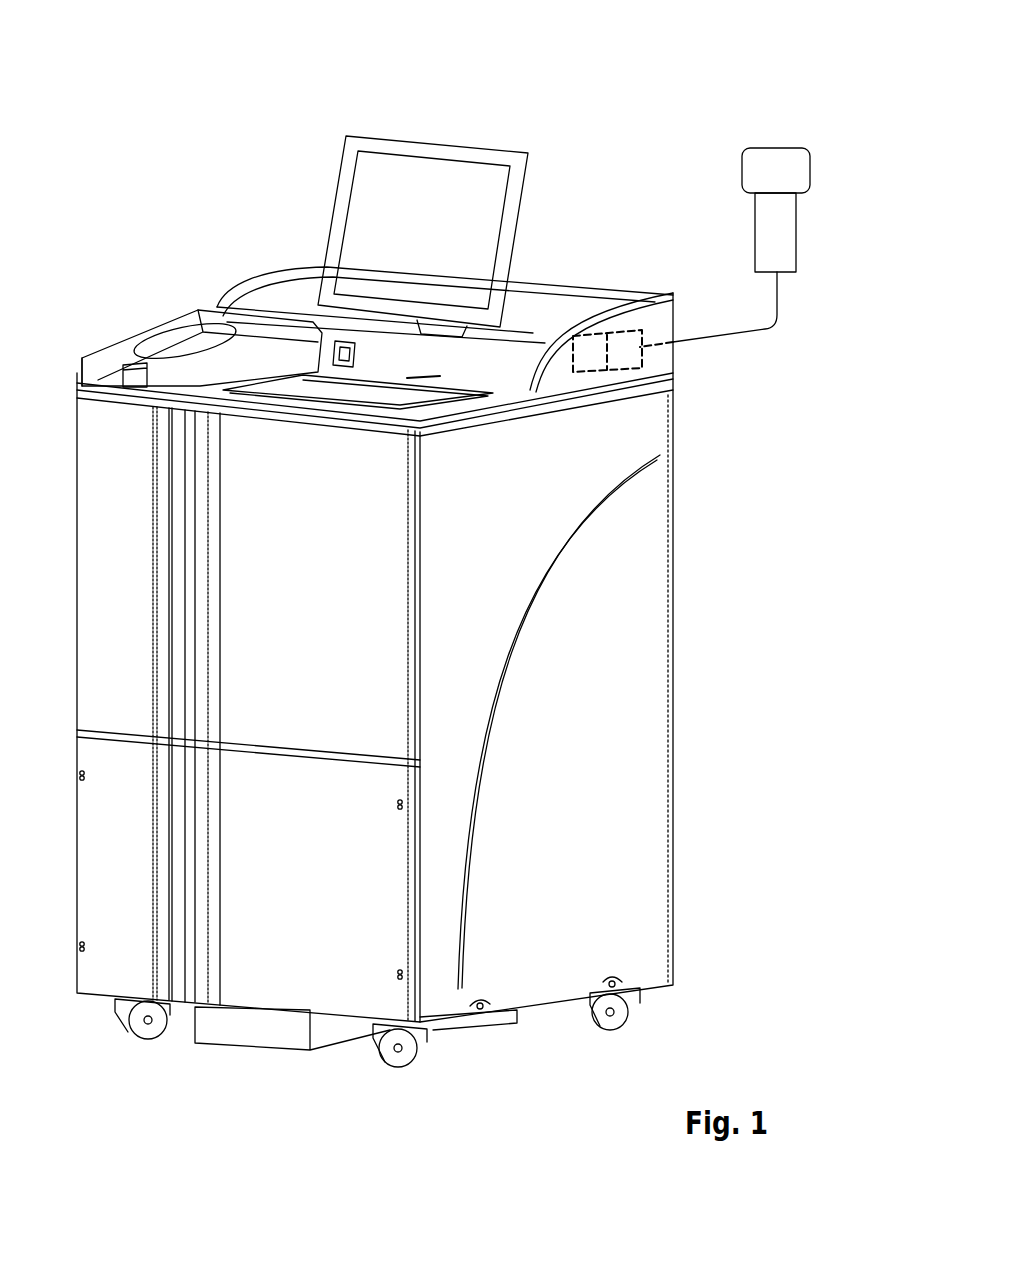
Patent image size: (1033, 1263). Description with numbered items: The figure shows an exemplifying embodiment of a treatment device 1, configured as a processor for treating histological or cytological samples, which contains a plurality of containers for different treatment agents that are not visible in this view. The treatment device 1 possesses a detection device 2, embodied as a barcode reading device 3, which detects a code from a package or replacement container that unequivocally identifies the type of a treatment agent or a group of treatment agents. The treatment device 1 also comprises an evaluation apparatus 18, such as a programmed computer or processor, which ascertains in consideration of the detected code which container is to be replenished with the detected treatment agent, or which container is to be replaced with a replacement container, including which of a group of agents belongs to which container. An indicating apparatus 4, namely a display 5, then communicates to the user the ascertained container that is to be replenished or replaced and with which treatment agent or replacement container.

The treatment device 1 is at (144, 151).
The detection device 2 is at (722, 109).
The barcode reading device 3 is at (770, 212).
The indicating apparatus 4 is at (549, 94).
The display 5 is at (408, 175).
The evaluation apparatus 18 is at (624, 355).